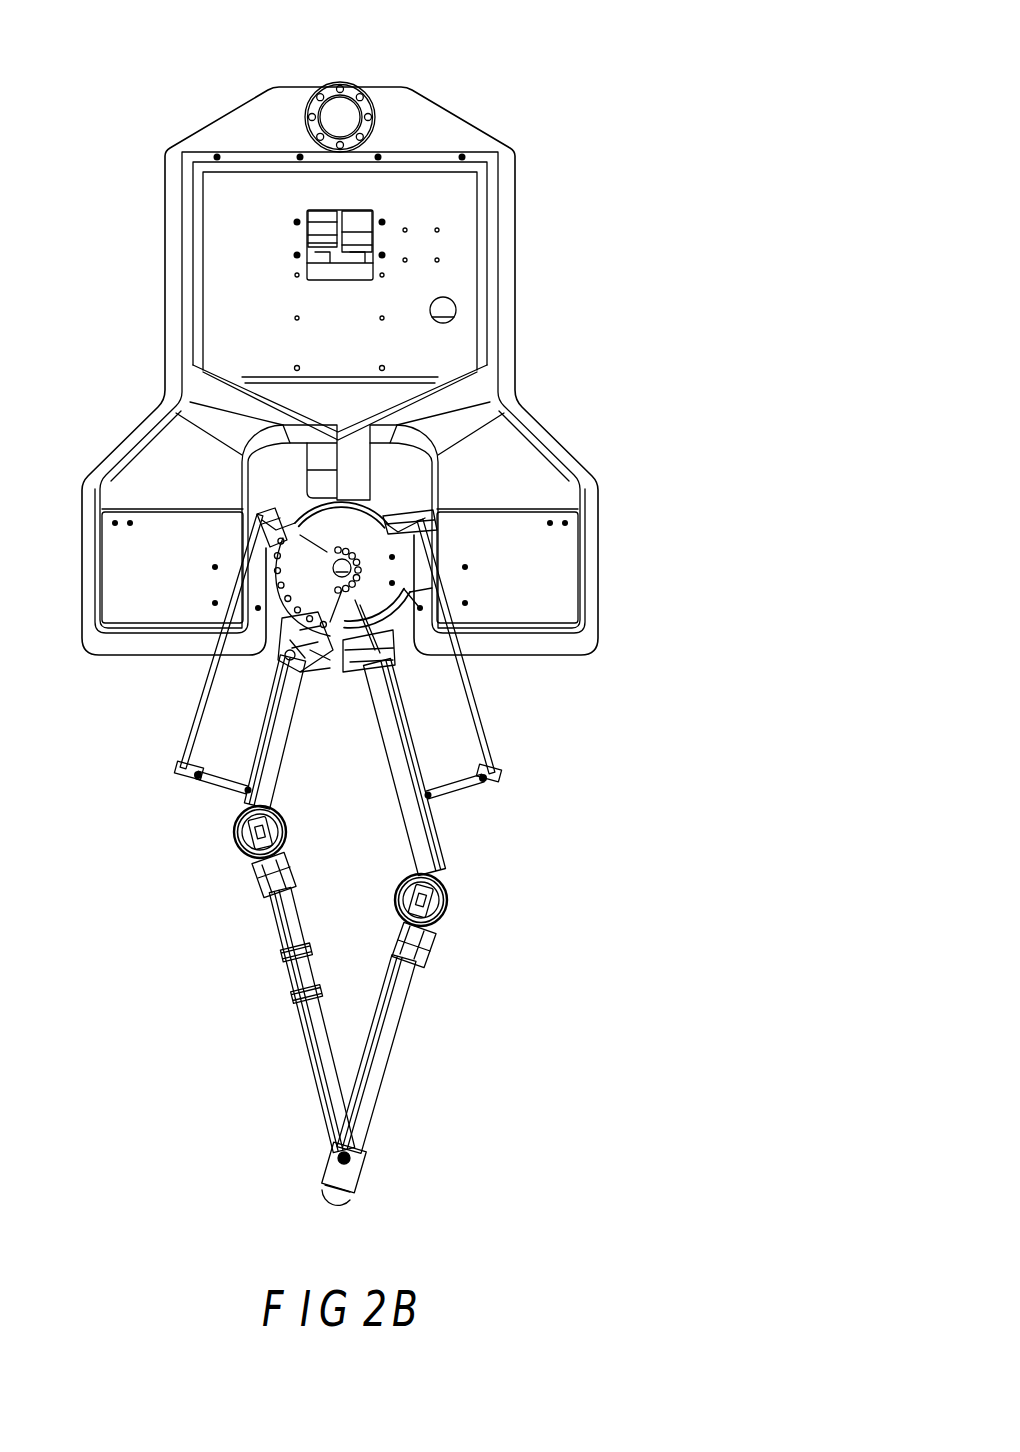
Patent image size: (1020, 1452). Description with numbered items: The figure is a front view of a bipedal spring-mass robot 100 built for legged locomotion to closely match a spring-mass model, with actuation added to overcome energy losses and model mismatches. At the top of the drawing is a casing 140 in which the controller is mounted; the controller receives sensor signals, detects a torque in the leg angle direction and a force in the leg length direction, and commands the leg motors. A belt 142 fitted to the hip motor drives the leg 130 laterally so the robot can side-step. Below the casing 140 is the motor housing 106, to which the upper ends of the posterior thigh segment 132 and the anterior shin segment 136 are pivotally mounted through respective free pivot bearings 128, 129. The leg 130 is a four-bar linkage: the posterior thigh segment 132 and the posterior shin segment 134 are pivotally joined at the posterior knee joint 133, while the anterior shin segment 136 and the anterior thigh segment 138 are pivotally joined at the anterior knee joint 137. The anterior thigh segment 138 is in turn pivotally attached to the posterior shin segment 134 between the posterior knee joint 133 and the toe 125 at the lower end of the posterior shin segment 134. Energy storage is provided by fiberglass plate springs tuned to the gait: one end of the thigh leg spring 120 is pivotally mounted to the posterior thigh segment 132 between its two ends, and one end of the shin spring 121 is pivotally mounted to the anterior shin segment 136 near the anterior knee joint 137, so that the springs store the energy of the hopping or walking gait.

The bipedal robot 100 is at (541, 90).
The motor housing 106 is at (420, 588).
The thigh leg spring 120 is at (483, 750).
The shin spring 121 is at (187, 747).
The toe 125 is at (345, 1210).
The free pivot bearing 128 is at (393, 662).
The free pivot bearing 129 is at (283, 658).
The leg 130 is at (205, 897).
The posterior thigh segment 132 is at (433, 843).
The posterior knee joint 133 is at (453, 900).
The posterior shin segment 134 is at (383, 1060).
The anterior shin segment 136 is at (268, 750).
The anterior knee joint 137 is at (288, 832).
The anterior thigh segment 138 is at (300, 1017).
The casing 140 is at (462, 285).
The belt 142 is at (308, 222).